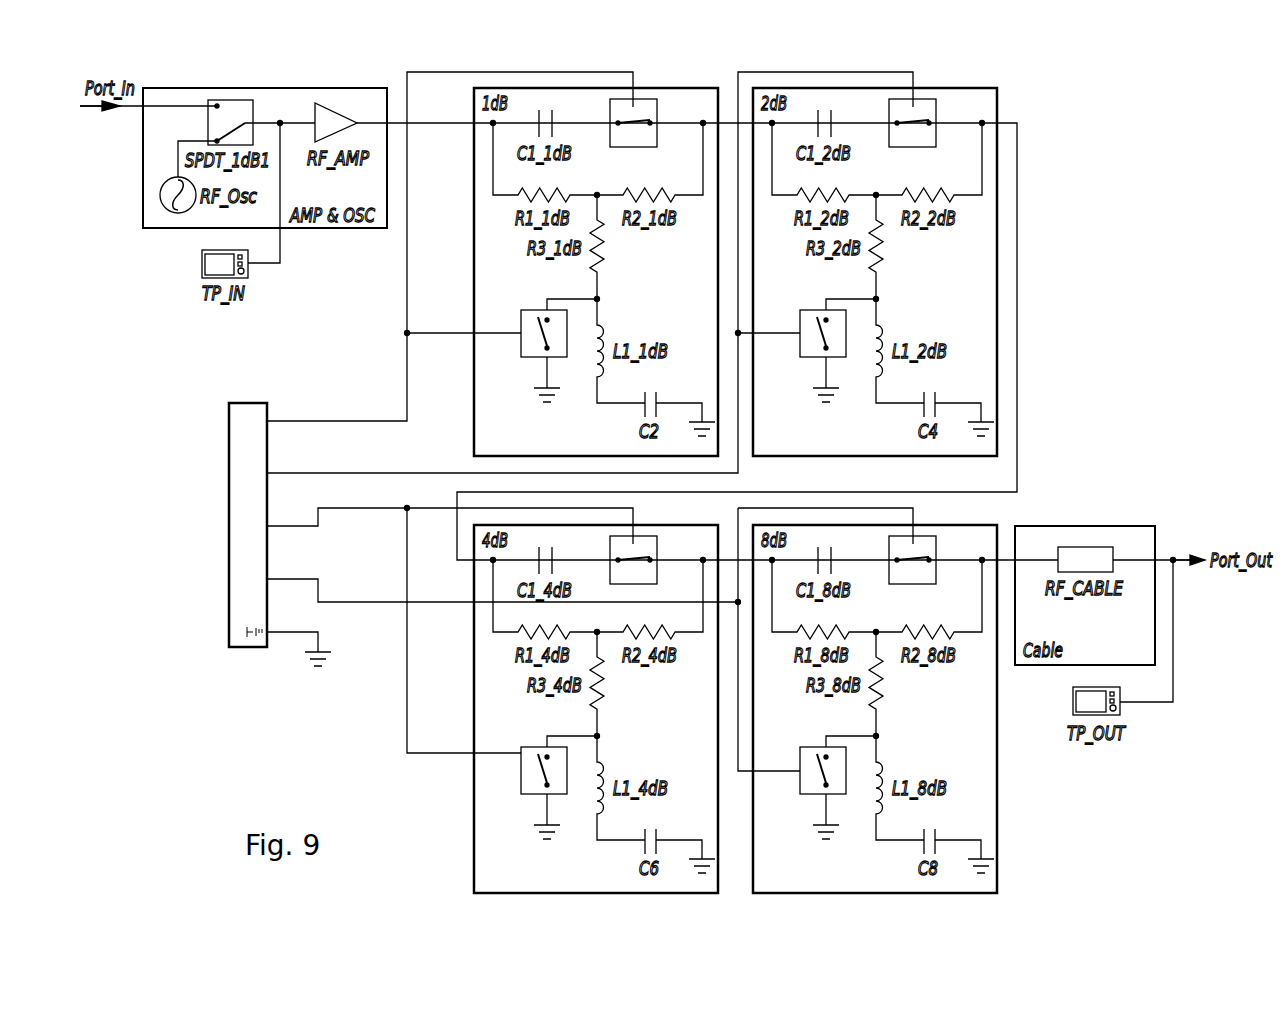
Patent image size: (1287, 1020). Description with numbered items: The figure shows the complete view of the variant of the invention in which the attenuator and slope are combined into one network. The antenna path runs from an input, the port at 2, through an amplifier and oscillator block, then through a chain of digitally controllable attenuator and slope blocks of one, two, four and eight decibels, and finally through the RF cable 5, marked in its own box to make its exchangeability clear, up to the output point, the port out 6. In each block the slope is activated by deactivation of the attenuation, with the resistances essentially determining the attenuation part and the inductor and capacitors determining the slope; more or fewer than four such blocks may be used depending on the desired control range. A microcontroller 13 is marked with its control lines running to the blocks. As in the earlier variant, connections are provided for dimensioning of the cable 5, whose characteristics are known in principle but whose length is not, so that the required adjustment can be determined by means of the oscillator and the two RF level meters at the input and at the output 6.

The port in 2 is at (114, 110).
The RF cable 5 is at (1083, 547).
The port out 6 is at (1200, 556).
The microcontroller 13 is at (229, 588).